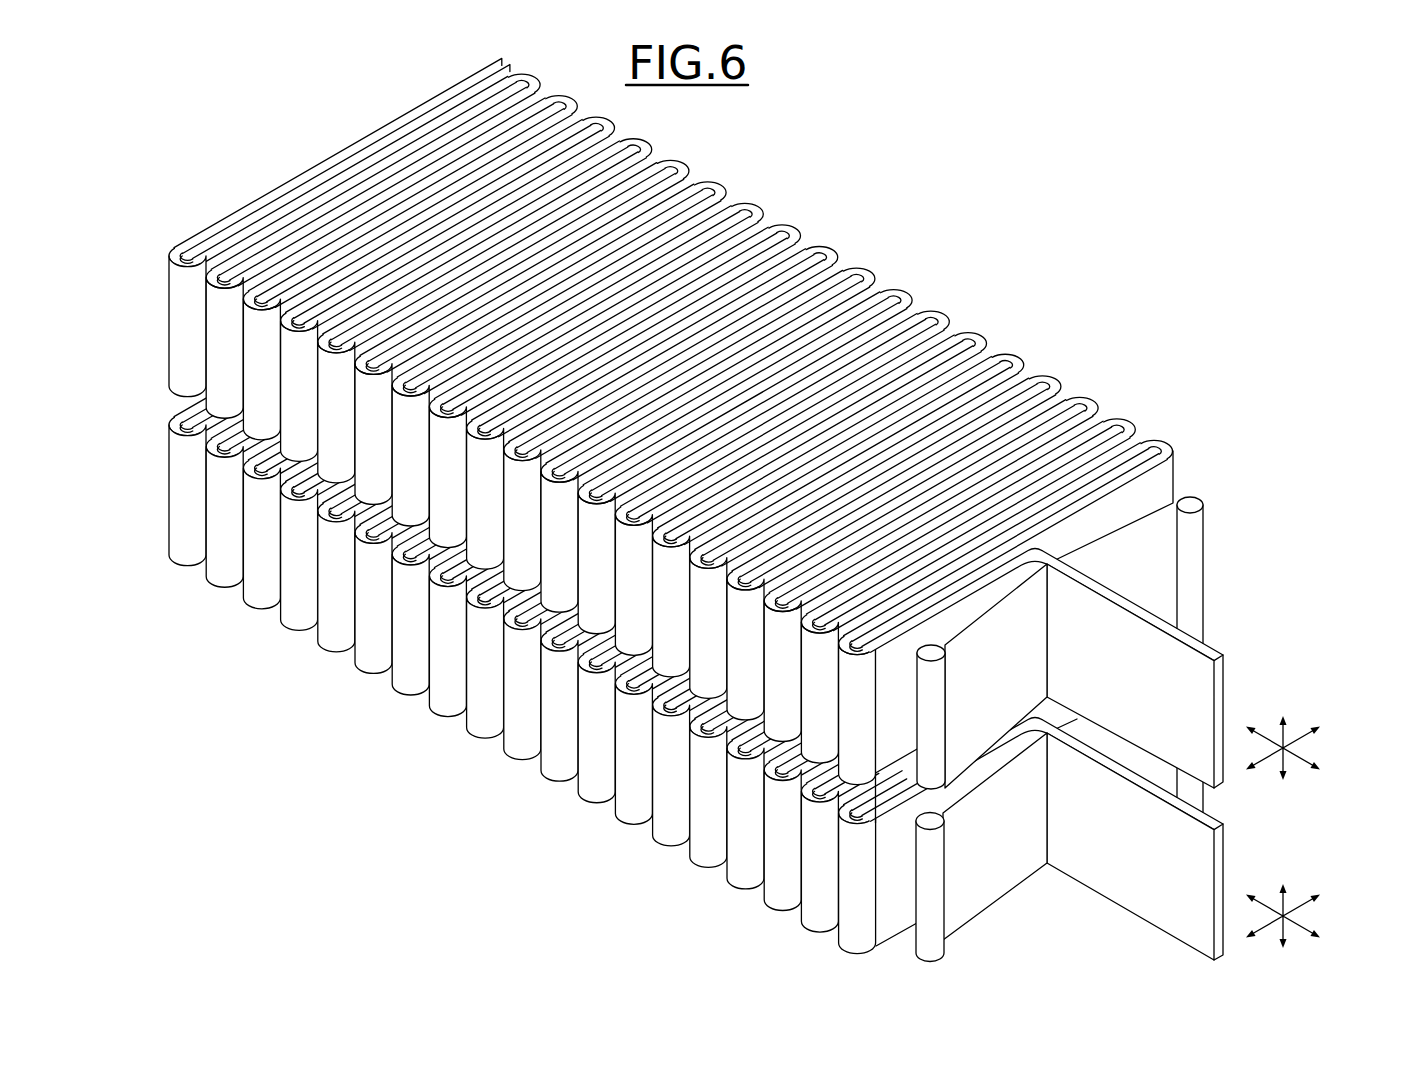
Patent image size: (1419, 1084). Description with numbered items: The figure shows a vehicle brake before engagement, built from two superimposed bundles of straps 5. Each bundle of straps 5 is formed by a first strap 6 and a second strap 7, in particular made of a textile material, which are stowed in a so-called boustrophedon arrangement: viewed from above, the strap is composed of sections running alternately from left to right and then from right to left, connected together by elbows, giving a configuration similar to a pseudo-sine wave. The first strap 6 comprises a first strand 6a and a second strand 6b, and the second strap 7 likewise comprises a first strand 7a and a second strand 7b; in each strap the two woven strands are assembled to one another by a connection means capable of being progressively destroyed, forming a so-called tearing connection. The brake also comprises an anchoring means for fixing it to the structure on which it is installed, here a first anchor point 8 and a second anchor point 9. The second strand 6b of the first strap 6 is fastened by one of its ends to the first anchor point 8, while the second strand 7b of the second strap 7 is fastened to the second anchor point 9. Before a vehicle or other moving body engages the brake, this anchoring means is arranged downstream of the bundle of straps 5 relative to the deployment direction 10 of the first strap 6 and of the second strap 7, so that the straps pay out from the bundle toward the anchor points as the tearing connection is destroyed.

The bundle of straps 5 is at (640, 505).
The first strap 6 is at (197, 249).
The second strap 7 is at (166, 259).
The first anchor point 8 is at (1208, 563).
The second anchor point 9 is at (943, 942).
The first strand 6a is at (1232, 657).
The second strand 6b is at (1153, 578).
The first strand 7a is at (1156, 672).
The second strand 7b is at (1022, 874).
The deployment direction 10 is at (1329, 738).